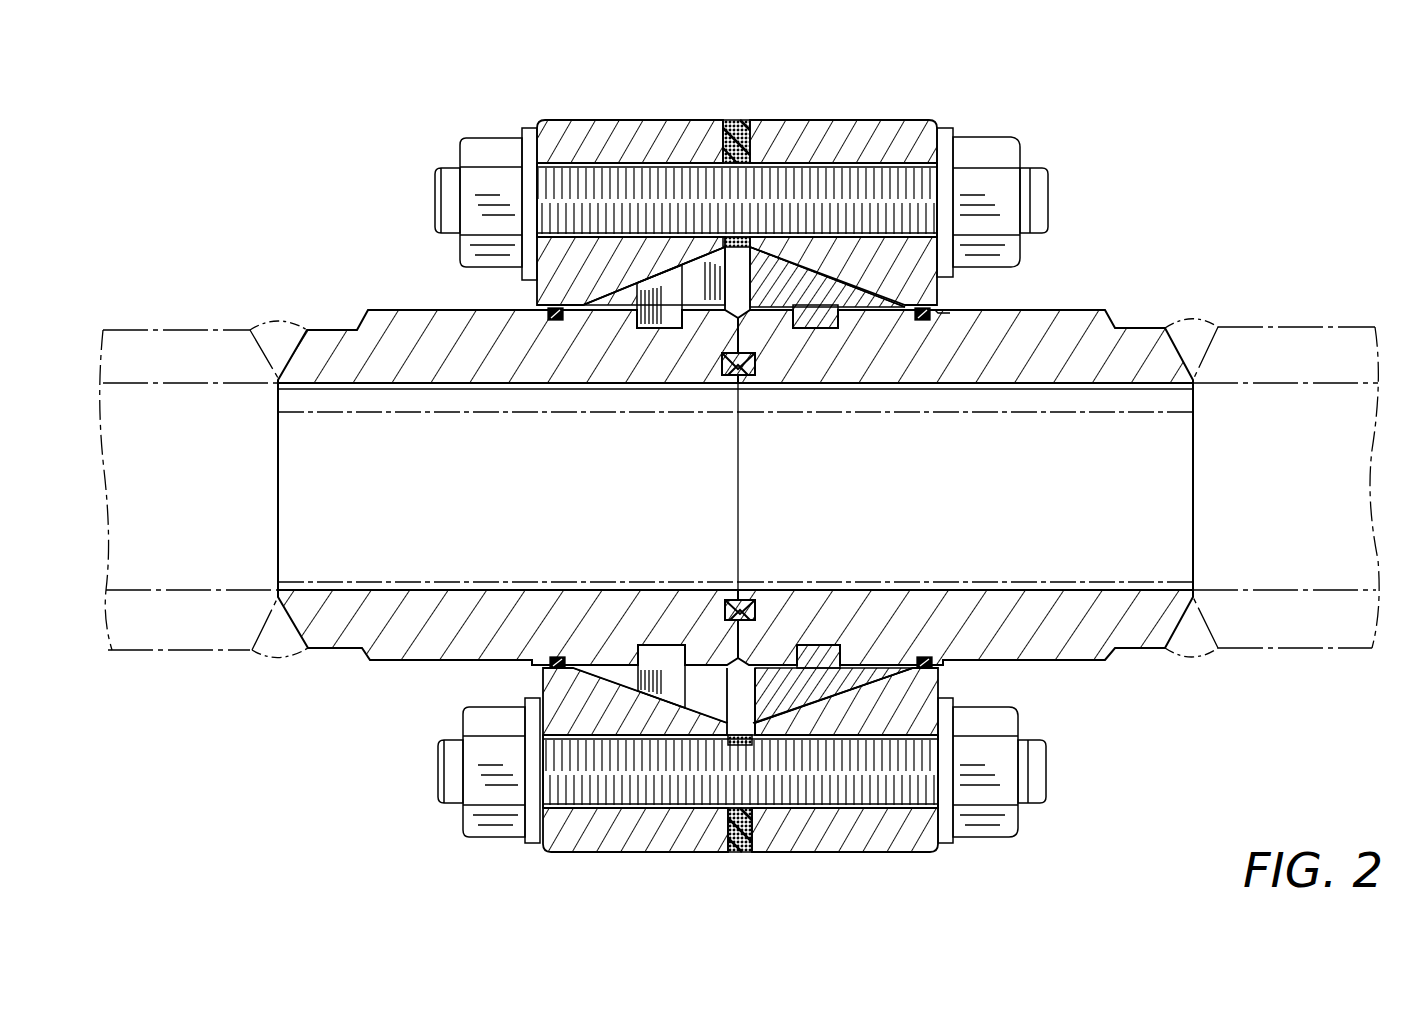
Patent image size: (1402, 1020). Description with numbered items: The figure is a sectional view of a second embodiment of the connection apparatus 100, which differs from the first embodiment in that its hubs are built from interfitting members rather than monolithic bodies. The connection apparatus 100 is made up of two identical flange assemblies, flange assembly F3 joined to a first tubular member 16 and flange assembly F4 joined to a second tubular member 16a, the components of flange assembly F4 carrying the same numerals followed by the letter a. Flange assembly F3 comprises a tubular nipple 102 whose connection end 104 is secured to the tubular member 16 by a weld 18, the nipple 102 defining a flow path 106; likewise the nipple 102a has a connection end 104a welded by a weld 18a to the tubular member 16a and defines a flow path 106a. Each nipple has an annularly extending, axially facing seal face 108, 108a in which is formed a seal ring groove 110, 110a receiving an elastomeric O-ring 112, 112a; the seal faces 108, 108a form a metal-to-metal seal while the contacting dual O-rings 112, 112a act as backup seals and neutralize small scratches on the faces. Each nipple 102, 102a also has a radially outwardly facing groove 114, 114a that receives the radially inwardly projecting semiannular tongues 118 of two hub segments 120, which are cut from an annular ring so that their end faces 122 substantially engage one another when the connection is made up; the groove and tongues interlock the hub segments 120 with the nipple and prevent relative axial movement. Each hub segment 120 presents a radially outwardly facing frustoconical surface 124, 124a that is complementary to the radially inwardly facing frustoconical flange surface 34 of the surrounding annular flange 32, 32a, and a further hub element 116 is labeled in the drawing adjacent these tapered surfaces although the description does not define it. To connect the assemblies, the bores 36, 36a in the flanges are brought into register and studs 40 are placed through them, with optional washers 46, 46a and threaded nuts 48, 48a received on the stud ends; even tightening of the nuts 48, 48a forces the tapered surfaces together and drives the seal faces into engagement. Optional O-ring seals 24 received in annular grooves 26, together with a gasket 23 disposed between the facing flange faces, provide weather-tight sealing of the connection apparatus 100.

The first tubular member 16 is at (1312, 336).
The second tubular member 16a is at (175, 340).
The weld 18 is at (1190, 326).
The weld 18a is at (283, 647).
The gasket 23 is at (735, 122).
The O-ring seal 24 is at (927, 325).
The annular groove 26 is at (932, 318).
The annular flange 32 is at (838, 122).
The annular flange 32a is at (606, 122).
The frustoconical flange surface 34 is at (850, 297).
The bore 36 is at (828, 812).
The bore 36a is at (628, 822).
The stud 40 is at (780, 185).
The washer 46 is at (947, 848).
The washer 46a is at (533, 845).
The threaded nut 48 is at (1002, 832).
The threaded nut 48a is at (485, 835).
The connection apparatus 100 is at (1108, 110).
The tubular nipple 102 is at (1072, 318).
The tubular nipple 102a is at (392, 312).
The connection end 104 is at (1195, 368).
The connection end 104a is at (292, 345).
The flow path 106 is at (1102, 518).
The flow path 106a is at (425, 518).
The seal face 108 is at (740, 328).
The seal face 108a is at (722, 612).
The seal ring groove 110 is at (742, 378).
The seal ring groove 110a is at (733, 620).
The O-ring 112 is at (736, 380).
The O-ring 112a is at (738, 598).
The groove 114 is at (815, 695).
The groove 114a is at (648, 330).
The tapered wedge 116 is at (872, 310).
The semiannular tongue 118 is at (840, 330).
The hub segment 120 is at (812, 688).
The end face 122 is at (675, 318).
The frustoconical surface 124 is at (885, 688).
The frustoconical surface 124a is at (615, 290).
The flange assembly F3 is at (962, 110).
The flange assembly F4 is at (518, 90).